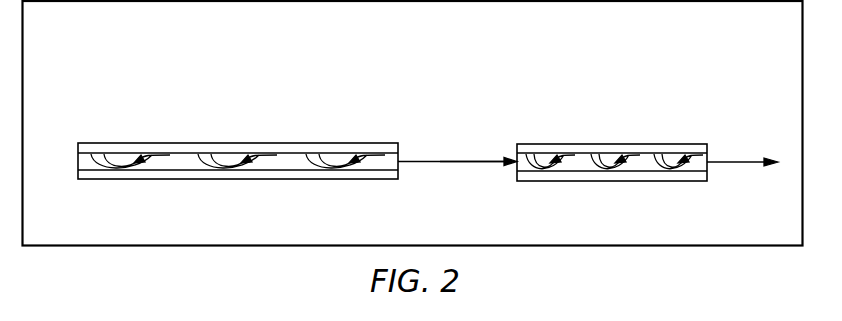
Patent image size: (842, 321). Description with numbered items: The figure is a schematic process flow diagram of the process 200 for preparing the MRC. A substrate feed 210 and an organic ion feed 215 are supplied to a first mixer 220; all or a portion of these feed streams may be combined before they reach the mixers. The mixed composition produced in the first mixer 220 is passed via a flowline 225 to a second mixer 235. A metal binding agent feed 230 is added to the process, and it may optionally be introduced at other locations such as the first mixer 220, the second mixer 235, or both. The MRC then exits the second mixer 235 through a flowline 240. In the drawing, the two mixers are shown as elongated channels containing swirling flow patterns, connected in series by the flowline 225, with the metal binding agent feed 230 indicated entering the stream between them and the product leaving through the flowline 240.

The process 200 is at (63, 30).
The substrate feed 210 is at (223, 146).
The organic ion feed 215 is at (182, 143).
The first mixer 220 is at (256, 142).
The flowline 225 is at (457, 172).
The metal binding agent feed 230 is at (462, 161).
The second mixer 235 is at (549, 143).
The flowline 240 is at (742, 172).